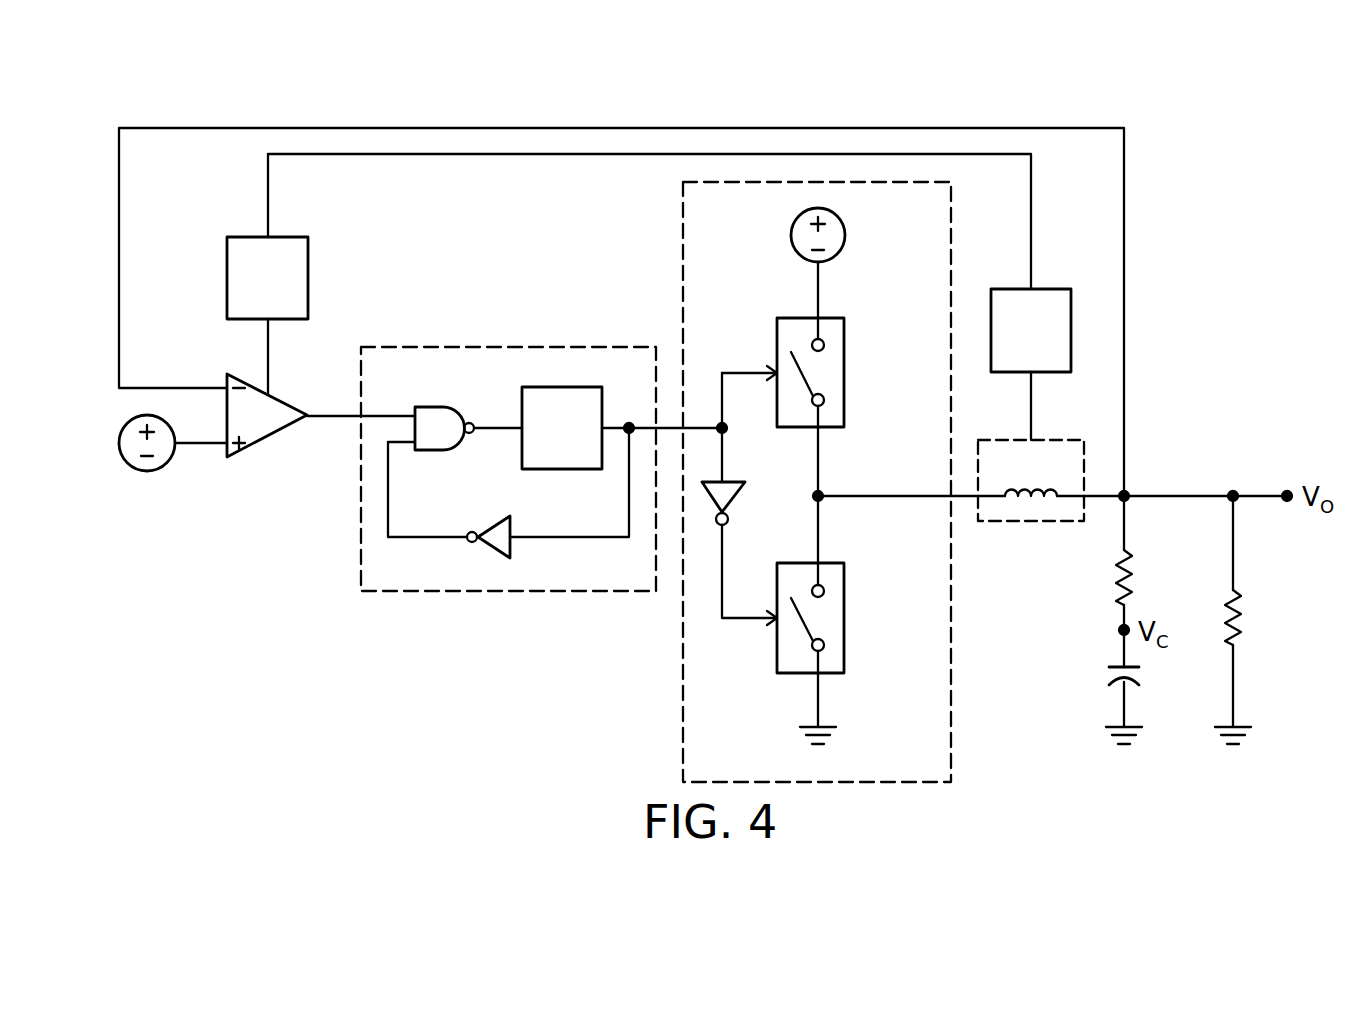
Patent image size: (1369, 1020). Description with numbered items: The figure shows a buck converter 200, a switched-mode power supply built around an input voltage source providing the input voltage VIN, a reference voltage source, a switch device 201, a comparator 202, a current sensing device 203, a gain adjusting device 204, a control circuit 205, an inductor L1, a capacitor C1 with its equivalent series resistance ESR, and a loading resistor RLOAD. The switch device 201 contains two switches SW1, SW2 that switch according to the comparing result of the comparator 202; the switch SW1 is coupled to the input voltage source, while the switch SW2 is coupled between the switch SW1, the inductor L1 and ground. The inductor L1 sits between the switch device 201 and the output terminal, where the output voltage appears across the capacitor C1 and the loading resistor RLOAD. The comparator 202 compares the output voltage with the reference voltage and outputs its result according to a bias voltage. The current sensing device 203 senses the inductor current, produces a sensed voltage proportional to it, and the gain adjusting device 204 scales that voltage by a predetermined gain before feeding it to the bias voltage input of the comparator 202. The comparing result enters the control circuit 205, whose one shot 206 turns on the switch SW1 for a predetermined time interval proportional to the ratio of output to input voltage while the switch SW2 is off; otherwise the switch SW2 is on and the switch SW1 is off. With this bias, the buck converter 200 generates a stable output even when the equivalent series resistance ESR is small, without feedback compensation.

The buck converter 200 is at (141, 101).
The switch device 201 is at (951, 671).
The comparator 202 is at (276, 441).
The current sensing device 203 is at (1045, 289).
The gain adjusting device 204 is at (283, 237).
The control circuit 205 is at (578, 347).
The one shot 206 is at (565, 387).
The input voltage VIN is at (845, 235).
The switch SW1 is at (844, 373).
The switch SW2 is at (844, 618).
The inductor L1 is at (1012, 494).
The equivalent series resistance ESR is at (1133, 580).
The capacitor C1 is at (1141, 677).
The loading resistor RLOAD is at (1243, 621).